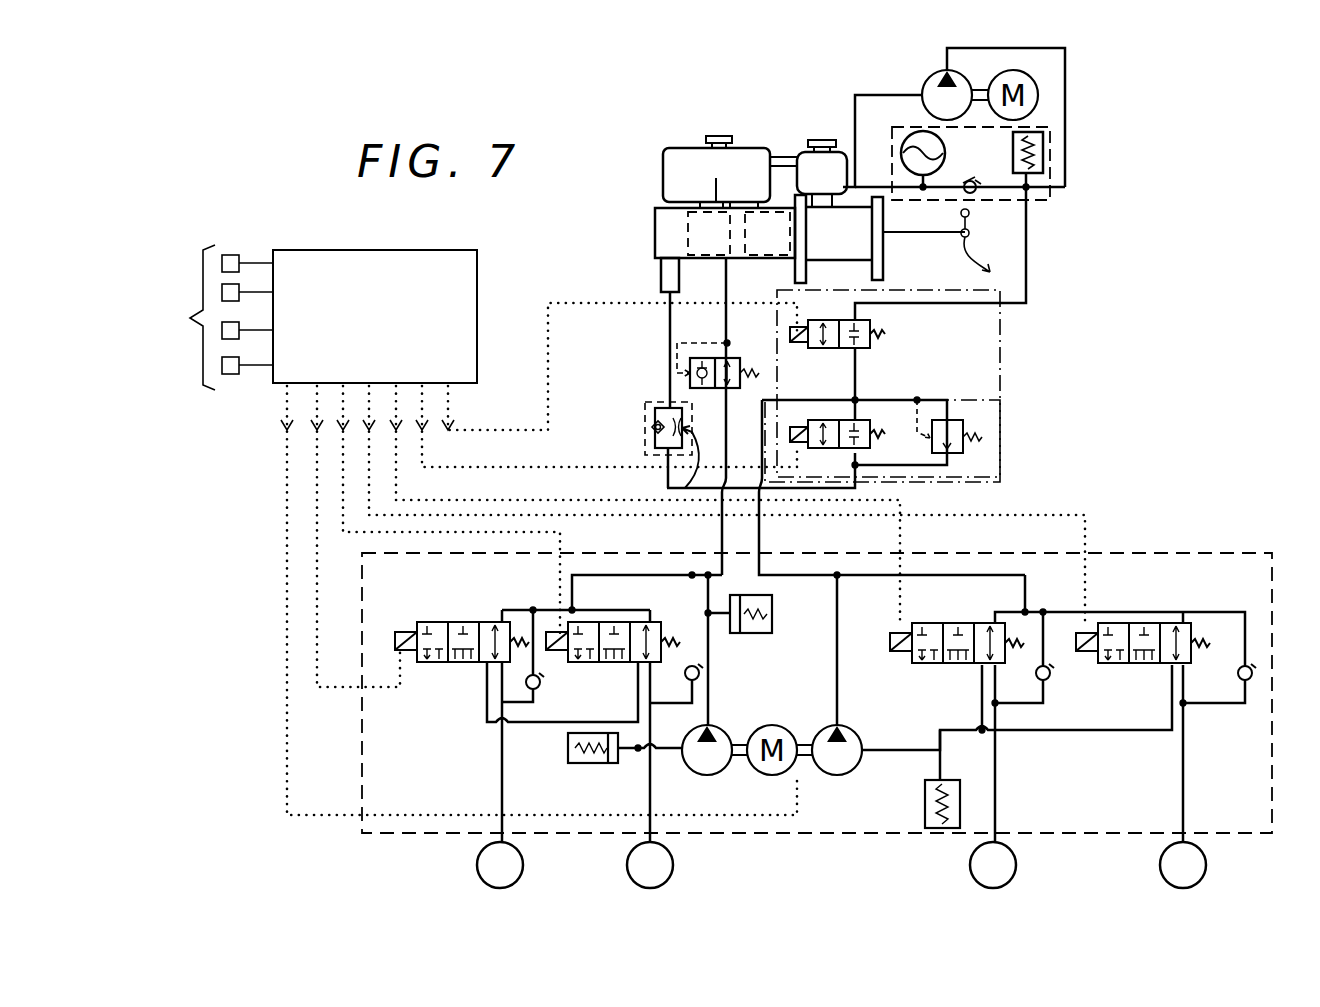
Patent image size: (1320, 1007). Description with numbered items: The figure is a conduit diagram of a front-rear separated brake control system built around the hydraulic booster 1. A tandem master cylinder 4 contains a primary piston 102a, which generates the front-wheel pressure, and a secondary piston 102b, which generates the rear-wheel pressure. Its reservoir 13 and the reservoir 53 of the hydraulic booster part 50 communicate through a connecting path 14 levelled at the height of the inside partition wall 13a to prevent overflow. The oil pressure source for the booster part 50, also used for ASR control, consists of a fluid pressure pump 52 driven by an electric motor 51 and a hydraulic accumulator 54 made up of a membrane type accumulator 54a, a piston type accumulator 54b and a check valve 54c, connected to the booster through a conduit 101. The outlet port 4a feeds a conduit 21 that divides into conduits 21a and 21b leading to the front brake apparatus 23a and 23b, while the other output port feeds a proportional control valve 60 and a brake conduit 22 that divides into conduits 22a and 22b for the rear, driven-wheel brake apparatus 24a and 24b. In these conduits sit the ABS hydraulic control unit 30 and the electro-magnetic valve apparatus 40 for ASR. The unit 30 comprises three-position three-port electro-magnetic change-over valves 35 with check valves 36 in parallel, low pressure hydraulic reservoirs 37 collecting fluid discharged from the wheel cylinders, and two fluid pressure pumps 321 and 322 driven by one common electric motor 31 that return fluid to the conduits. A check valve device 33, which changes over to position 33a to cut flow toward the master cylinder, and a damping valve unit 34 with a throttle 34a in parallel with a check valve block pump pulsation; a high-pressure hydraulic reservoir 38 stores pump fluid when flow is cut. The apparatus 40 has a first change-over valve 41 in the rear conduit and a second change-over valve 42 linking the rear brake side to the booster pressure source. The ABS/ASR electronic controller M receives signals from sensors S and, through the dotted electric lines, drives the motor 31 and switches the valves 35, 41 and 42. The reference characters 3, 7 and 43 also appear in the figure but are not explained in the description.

The hydraulic booster 1 is at (762, 119).
The hydraulic pressure source unit 3 is at (1013, 363).
The tandem master cylinder 4 is at (658, 232).
The outlet port 4a is at (728, 268).
The brake pedal / switch 7 is at (973, 272).
The hydraulic reservoir 13 is at (665, 150).
The inside partition wall 13a is at (716, 180).
The connecting path 14 is at (785, 157).
The conduit 21 is at (720, 540).
The conduit 21a is at (591, 596).
The conduit 21b is at (532, 608).
The brake conduit 22 is at (762, 540).
The conduit 22a is at (1186, 790).
The conduit 22b is at (997, 790).
The brake apparatus 23a is at (674, 858).
The brake apparatus 23b is at (524, 858).
The brake apparatus 24a is at (1207, 856).
The brake apparatus 24b is at (1017, 858).
The ABS hydraulic control unit 30 is at (1050, 543).
The electric motor 31 is at (775, 775).
The check valve device 33 is at (737, 355).
The position 33a is at (680, 374).
The damping valve unit 34 is at (647, 413).
The throttle 34a is at (687, 488).
The electro-magnetic change-over valve 35 is at (452, 622).
The check valve 36 is at (540, 688).
The low pressure hydraulic reservoir 37 is at (590, 763).
The high-pressure hydraulic reservoir 38 is at (772, 606).
The electro-magnetic valve apparatus 40 is at (1006, 449).
The first change-over valve 41 is at (862, 444).
The second change-over valve 42 is at (870, 348).
The pressure reducing valve 43 is at (958, 420).
The hydraulic booster part 50 is at (862, 243).
The electric motor 51 is at (1039, 95).
The fluid pressure pump 52 is at (932, 83).
The hydraulic reservoir 53 is at (808, 152).
The hydraulic accumulator 54 is at (1050, 176).
The membrane type accumulator 54a is at (940, 144).
The piston type accumulator 54b is at (1043, 141).
The check valve 54c is at (973, 193).
The proportional control valve 60 is at (661, 282).
The conduit 101 is at (857, 100).
The primary piston 102a is at (762, 212).
The secondary piston 102b is at (688, 230).
The fluid pressure pump 321 is at (703, 769).
The fluid pressure pump 322 is at (840, 774).
The sensors S is at (215, 317).
The ABS/ASR electronic controller M is at (455, 371).